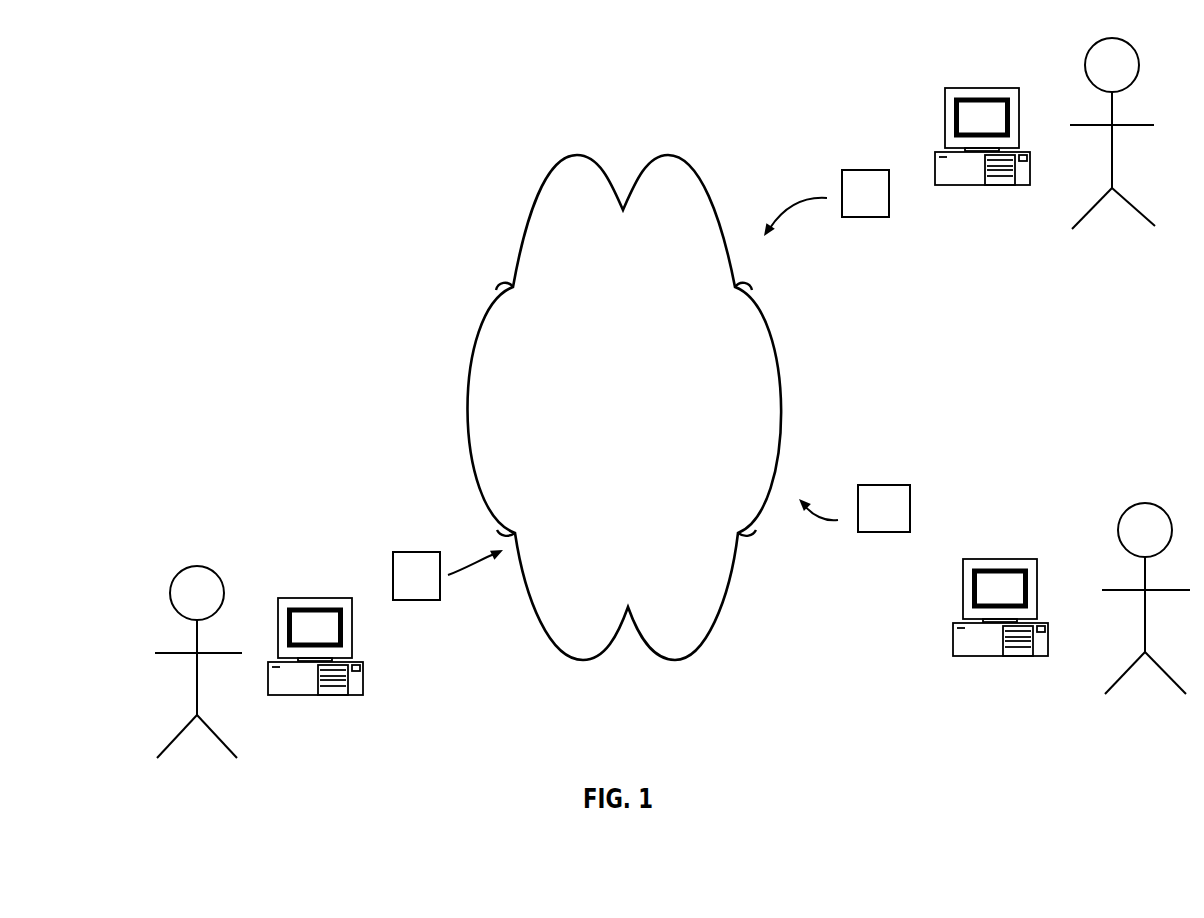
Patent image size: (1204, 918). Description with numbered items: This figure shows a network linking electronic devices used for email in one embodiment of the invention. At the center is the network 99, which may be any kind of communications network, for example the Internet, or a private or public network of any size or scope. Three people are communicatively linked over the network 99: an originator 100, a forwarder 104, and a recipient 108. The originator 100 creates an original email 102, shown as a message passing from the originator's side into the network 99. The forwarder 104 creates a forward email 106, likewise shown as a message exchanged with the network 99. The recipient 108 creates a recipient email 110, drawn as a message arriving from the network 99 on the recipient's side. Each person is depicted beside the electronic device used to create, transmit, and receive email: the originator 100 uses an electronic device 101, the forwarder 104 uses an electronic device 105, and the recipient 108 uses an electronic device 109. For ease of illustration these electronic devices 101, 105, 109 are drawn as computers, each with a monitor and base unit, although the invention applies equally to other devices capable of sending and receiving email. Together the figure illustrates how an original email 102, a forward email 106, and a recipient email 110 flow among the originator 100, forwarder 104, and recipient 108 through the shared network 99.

The network 99 is at (505, 229).
The originator 100 is at (201, 694).
The electronic device 101 is at (322, 697).
The original email 102 is at (416, 600).
The forwarder 104 is at (1150, 630).
The electronic device 105 is at (1000, 657).
The forward email 106 is at (902, 482).
The recipient 108 is at (1116, 162).
The electronic device 109 is at (980, 185).
The recipient email 110 is at (874, 217).